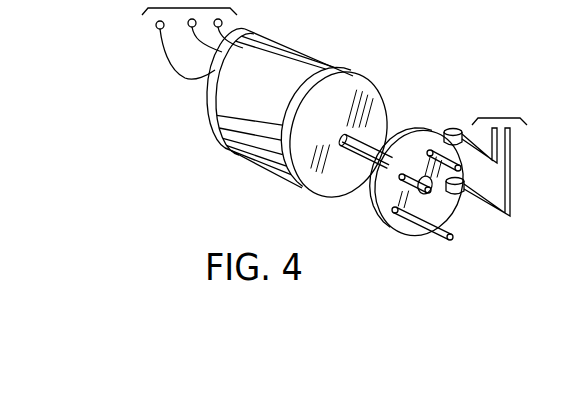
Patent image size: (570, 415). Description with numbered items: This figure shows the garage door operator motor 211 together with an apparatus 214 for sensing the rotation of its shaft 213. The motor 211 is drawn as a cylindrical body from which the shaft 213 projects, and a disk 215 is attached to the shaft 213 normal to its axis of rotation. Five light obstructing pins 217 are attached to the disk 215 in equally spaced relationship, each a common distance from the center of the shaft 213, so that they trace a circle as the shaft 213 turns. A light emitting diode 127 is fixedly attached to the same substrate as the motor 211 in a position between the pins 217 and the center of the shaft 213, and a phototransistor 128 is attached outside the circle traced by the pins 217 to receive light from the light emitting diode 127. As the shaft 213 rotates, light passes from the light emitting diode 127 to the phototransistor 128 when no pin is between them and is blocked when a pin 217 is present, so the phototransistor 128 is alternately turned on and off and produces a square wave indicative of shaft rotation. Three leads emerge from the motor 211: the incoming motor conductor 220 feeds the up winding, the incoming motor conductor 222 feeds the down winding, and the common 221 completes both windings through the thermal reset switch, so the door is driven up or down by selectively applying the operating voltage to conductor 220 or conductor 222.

The motor 211 is at (337, 73).
The shaft 213 is at (362, 197).
The disk 215 is at (388, 232).
The light obstructing pins 217 is at (440, 203).
The phototransistor 128 is at (456, 128).
The light emitting diode 127 is at (479, 214).
The apparatus for sensing rotation 214 is at (486, 100).
The incoming motor conductor 220 is at (230, 33).
The common 221 is at (200, 34).
The incoming motor conductor 222 is at (158, 43).